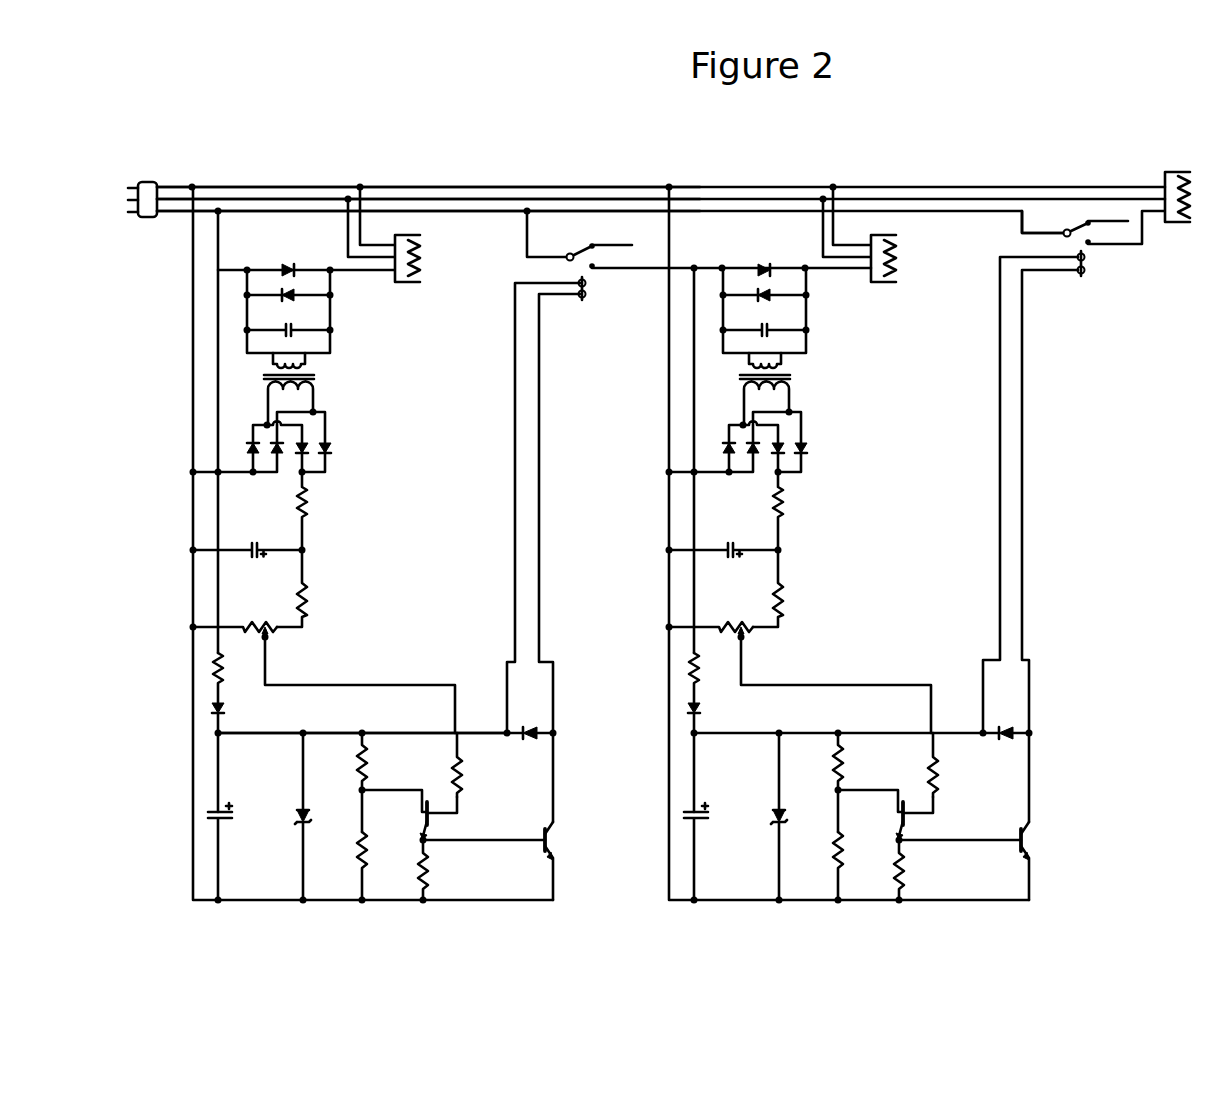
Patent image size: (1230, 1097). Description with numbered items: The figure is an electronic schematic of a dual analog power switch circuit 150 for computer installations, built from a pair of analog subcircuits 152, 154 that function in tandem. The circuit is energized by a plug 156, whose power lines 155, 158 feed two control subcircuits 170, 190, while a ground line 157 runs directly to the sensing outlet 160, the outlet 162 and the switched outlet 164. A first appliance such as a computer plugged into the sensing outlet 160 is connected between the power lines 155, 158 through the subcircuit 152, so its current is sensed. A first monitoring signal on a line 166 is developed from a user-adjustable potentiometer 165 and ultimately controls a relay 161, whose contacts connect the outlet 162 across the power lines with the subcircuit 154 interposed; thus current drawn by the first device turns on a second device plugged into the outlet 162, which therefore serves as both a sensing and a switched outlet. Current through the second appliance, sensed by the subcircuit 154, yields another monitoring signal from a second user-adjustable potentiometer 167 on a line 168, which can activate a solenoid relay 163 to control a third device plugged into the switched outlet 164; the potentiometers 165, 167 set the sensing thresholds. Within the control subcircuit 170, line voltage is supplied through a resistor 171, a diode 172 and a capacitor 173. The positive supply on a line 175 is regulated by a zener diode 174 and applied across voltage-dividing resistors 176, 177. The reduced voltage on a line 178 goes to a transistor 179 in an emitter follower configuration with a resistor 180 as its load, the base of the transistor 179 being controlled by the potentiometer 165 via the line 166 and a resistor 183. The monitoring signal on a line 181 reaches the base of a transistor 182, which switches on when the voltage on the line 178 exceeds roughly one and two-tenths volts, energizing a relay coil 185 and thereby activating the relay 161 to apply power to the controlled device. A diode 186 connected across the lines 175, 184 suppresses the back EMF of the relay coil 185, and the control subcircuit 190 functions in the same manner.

The dual analog power switch circuit 150 is at (425, 165).
The analog subcircuit 152 is at (379, 400).
The analog subcircuit 154 is at (860, 398).
The power line 155 is at (237, 186).
The plug 156 is at (148, 182).
The ground line 157 is at (176, 200).
The power line 158 is at (186, 212).
The sensing outlet 160 is at (405, 284).
The relay 161 is at (604, 293).
The outlet 162 is at (881, 284).
The solenoid relay 163 is at (1101, 263).
The switched outlet 164 is at (1183, 172).
The user-adjustable potentiometer 165 is at (273, 636).
The line 166 is at (388, 683).
The user-adjustable potentiometer 167 is at (749, 636).
The line 168 is at (858, 683).
The control subcircuit 170 is at (396, 630).
The resistor 171 is at (208, 665).
The diode 172 is at (208, 706).
The capacitor 173 is at (206, 814).
The zener diode 174 is at (297, 817).
The line 175 is at (333, 732).
The voltage-dividing resistor 176 is at (352, 771).
The voltage-dividing resistor 177 is at (356, 843).
The line 178 is at (380, 791).
The transistor 179 is at (424, 812).
The resistor 180 is at (430, 874).
The line 181 is at (465, 839).
The transistor 182 is at (558, 838).
The resistor 183 is at (462, 781).
The line 184 is at (555, 786).
The relay coil 185 is at (582, 302).
The diode 186 is at (535, 725).
The control subcircuit 190 is at (876, 603).